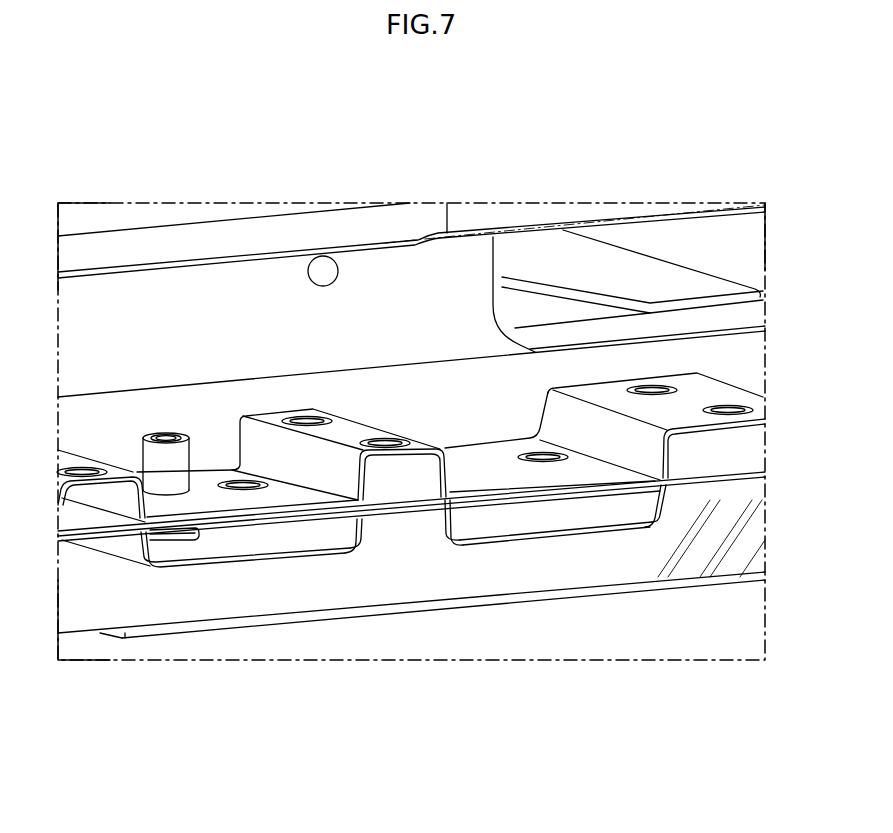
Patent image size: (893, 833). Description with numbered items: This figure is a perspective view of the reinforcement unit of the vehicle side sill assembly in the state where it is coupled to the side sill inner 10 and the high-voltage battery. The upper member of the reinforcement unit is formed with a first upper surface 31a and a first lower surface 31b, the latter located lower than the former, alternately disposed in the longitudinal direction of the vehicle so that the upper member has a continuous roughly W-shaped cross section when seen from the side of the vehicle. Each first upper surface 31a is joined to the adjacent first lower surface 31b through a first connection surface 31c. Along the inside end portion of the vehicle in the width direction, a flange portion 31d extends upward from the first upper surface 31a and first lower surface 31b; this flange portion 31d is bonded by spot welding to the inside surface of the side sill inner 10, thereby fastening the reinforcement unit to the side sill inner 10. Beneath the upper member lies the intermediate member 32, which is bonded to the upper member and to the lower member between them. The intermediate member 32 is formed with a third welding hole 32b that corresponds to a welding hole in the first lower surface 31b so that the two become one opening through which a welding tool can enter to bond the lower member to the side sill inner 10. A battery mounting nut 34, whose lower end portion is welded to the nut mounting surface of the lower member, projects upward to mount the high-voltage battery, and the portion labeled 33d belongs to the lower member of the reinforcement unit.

The side sill inner 10 is at (217, 293).
The first upper surface 31a is at (607, 393).
The first lower surface 31b is at (600, 470).
The first connection surface 31c is at (658, 450).
The flange portion 31d is at (397, 392).
The intermediate member 32 is at (383, 490).
The third welding hole 32b is at (540, 526).
The channel portion 33d is at (430, 522).
The battery mounting nut 34 is at (175, 478).